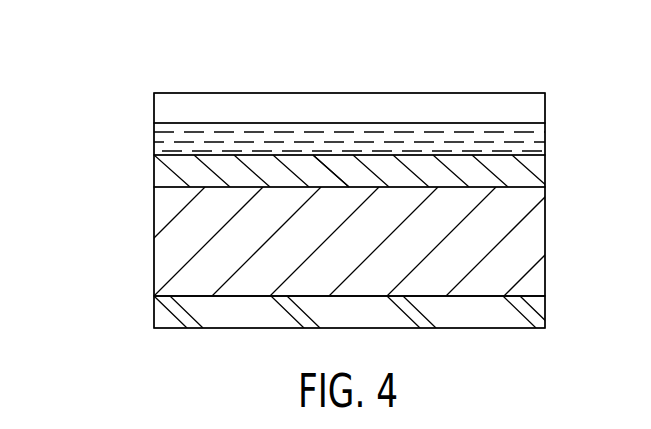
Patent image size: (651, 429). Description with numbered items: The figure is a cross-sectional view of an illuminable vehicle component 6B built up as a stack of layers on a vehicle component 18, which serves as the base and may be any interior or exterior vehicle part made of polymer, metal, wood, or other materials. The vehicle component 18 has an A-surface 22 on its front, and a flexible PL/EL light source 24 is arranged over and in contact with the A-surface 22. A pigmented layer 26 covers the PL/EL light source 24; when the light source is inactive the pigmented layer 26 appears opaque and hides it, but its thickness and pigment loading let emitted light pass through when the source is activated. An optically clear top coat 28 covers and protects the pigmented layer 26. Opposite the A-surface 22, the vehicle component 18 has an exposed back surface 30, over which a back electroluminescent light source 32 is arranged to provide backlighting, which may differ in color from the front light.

The illuminable vehicle component 6B is at (146, 55).
The clear top coat 28 is at (162, 110).
The pigmented layer 26 is at (162, 144).
The PL/EL light source 24 is at (162, 175).
The vehicle component 18 is at (162, 248).
The back electroluminescent light source 32 is at (162, 316).
The A-surface 22 is at (324, 182).
The back surface 30 is at (468, 299).